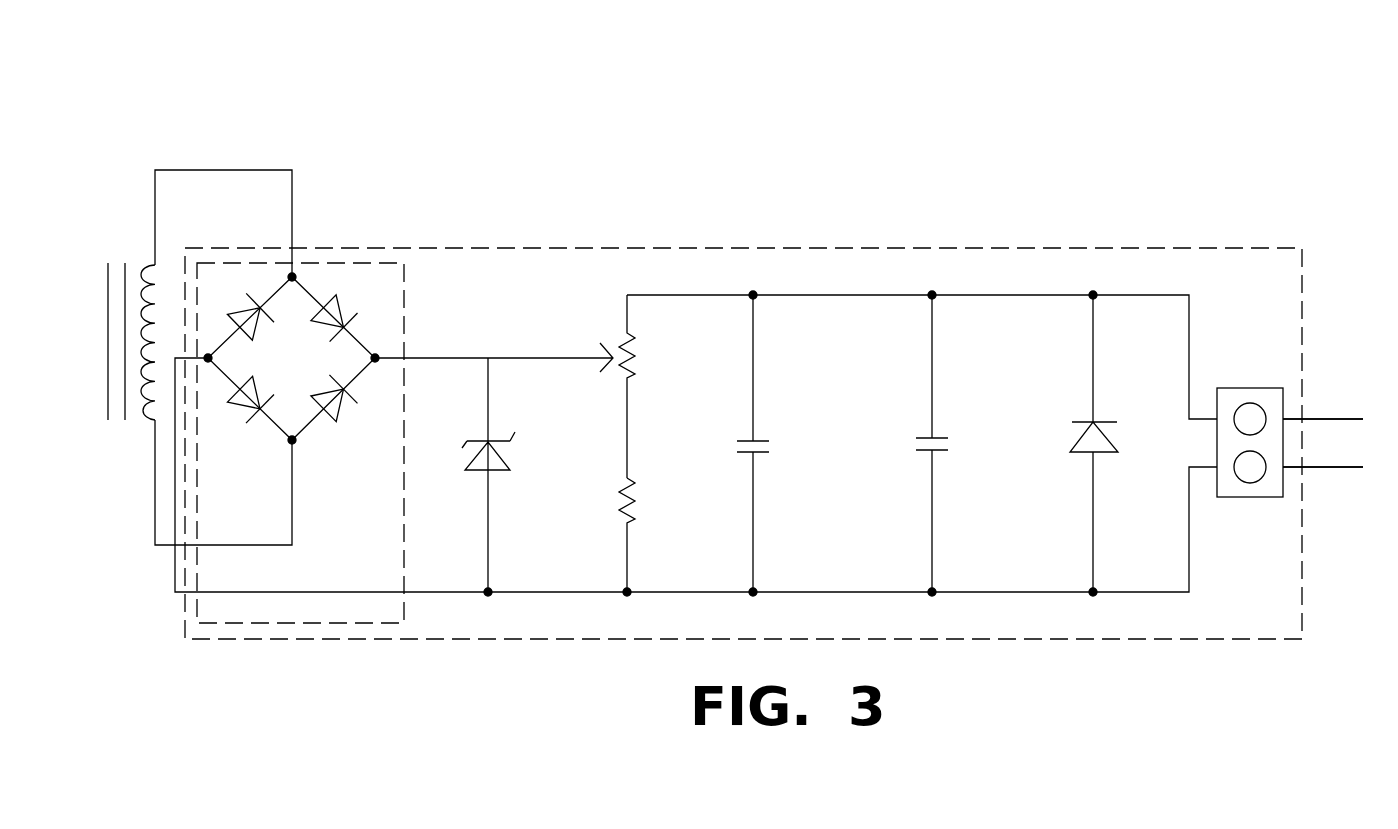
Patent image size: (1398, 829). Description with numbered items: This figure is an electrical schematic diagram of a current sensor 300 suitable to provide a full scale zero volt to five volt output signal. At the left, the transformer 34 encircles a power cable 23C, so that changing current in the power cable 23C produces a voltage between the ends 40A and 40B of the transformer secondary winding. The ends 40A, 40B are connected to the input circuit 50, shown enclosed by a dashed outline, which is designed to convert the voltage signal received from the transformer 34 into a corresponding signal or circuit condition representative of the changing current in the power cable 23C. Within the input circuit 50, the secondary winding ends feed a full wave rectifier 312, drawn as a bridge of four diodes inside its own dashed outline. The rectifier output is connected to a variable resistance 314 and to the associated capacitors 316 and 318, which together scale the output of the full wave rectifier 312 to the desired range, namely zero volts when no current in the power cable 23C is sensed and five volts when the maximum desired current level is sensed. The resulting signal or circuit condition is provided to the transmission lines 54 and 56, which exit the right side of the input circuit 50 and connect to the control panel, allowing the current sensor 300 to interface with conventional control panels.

The current sensor 300 is at (593, 170).
The input circuit 50 is at (1302, 308).
The power cable 23C is at (102, 398).
The transformer 34 is at (155, 278).
The secondary winding end 40A is at (155, 187).
The secondary winding end 40B is at (150, 522).
The full wave rectifier 312 is at (300, 625).
The variable resistance 314 is at (633, 377).
The capacitor 316 is at (758, 432).
The capacitor 318 is at (943, 433).
The transmission line 54 is at (1308, 418).
The transmission line 56 is at (1308, 468).